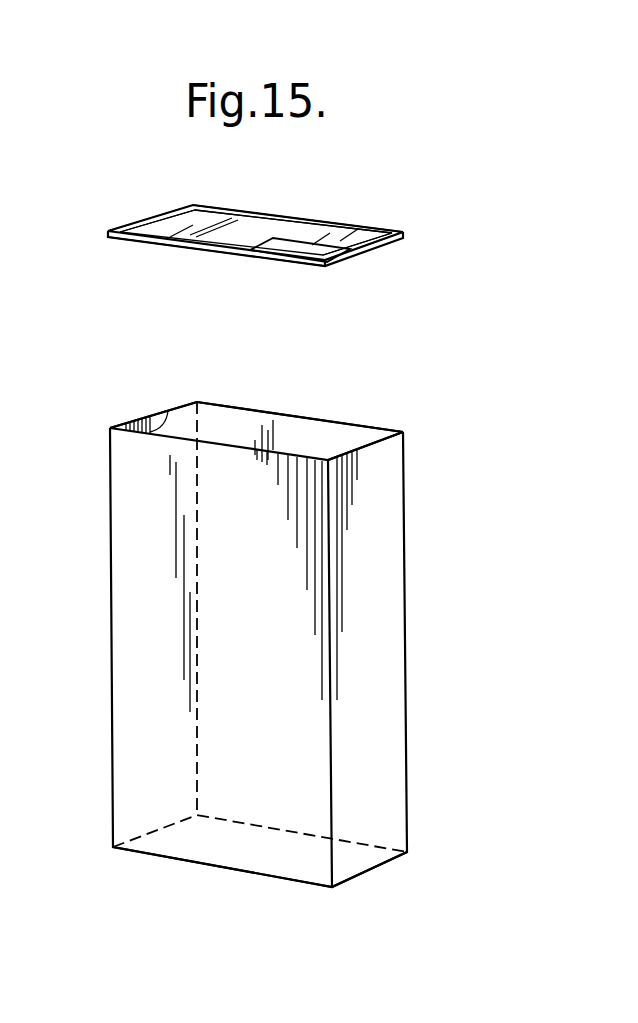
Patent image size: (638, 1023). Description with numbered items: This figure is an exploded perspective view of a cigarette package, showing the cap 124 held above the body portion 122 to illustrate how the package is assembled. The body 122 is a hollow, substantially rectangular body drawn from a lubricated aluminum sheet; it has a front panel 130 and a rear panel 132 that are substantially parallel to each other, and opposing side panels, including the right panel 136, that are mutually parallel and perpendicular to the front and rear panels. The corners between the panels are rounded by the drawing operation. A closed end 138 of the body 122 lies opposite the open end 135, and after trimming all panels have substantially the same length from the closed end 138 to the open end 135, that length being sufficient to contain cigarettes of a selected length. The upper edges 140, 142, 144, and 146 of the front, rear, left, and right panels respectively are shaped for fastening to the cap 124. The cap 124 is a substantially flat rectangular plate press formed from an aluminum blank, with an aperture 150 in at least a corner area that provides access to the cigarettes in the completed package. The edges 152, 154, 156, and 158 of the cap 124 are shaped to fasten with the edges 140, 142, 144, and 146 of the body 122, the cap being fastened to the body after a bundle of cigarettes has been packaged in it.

The body portion 122 is at (100, 658).
The cap 124 is at (139, 210).
The front panel 130 is at (247, 646).
The rear panel 132 is at (300, 432).
The open end 135 is at (221, 430).
The right panel 136 is at (372, 638).
The closed end 138 is at (225, 843).
The upper edge of front panel 140 is at (207, 445).
The upper edge of rear panel 142 is at (353, 422).
The upper edge of left panel 144 is at (168, 410).
The upper edge of right panel 146 is at (368, 447).
The aperture 150 is at (333, 256).
The cap edge 152 is at (212, 253).
The cap edge 154 is at (153, 212).
The cap edge 156 is at (287, 213).
The cap edge 158 is at (398, 248).